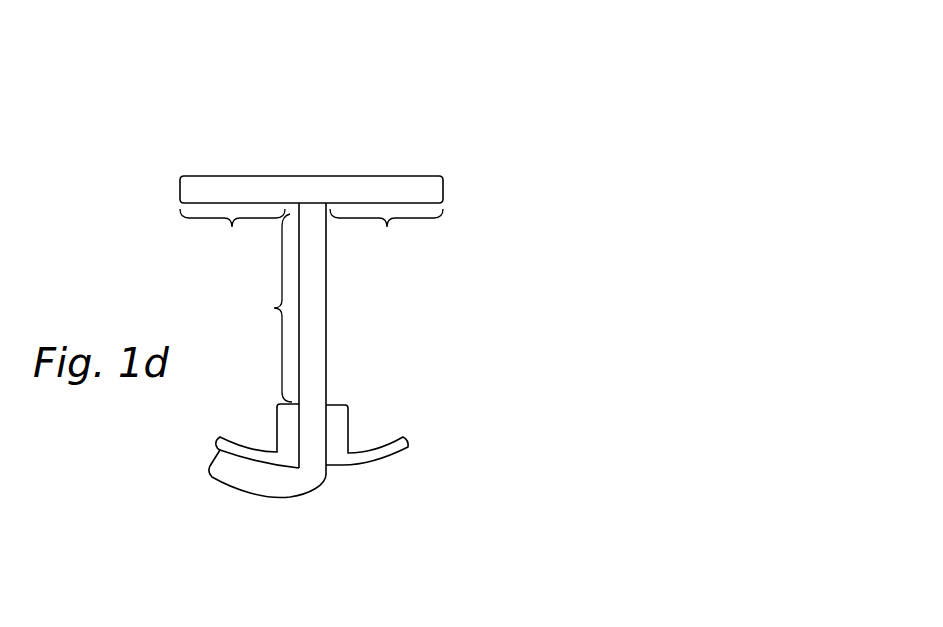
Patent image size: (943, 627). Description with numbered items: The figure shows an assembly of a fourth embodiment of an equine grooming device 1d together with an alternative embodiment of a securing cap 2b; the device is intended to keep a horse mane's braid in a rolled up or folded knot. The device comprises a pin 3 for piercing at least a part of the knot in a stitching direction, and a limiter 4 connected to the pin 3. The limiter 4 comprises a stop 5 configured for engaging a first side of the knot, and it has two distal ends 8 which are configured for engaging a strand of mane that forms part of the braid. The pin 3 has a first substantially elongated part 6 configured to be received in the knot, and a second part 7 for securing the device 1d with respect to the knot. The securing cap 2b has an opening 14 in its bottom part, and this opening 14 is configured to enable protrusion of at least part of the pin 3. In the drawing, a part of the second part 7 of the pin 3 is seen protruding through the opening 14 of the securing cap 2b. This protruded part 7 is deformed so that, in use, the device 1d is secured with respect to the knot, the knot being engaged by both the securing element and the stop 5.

The equine grooming device 1d is at (540, 105).
The limiter 4 is at (383, 170).
The distal ends 8 is at (176, 182).
The stop 5 is at (311, 235).
The first substantially elongated part 6 is at (270, 308).
The pin 3 is at (328, 317).
The securing cap 2b is at (420, 440).
The opening 14 is at (333, 472).
The second part 7 is at (313, 492).